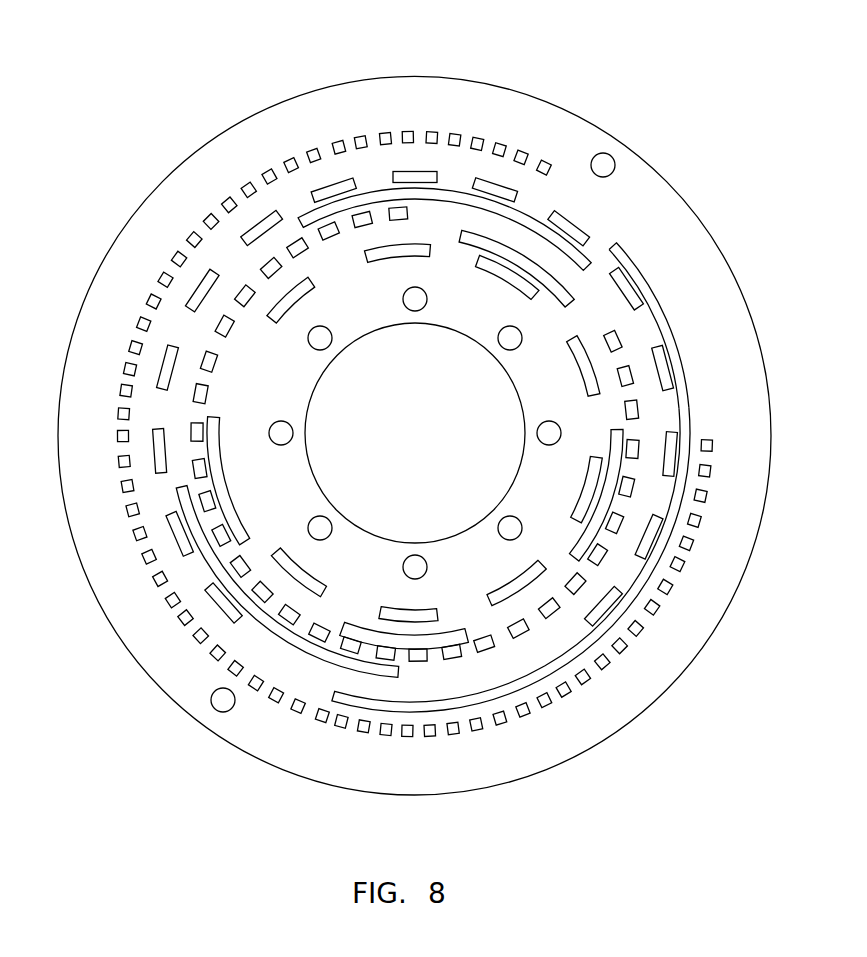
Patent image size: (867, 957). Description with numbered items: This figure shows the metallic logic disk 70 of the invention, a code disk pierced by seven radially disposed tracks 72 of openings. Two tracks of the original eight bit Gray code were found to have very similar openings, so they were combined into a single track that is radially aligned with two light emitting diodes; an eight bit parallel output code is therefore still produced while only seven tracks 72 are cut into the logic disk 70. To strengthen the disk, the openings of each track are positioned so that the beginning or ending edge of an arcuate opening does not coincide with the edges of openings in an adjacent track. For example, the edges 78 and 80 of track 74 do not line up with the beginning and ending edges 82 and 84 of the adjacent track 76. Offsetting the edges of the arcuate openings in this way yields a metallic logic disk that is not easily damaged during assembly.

The logic disk 70 is at (165, 173).
The tracks 72 is at (310, 597).
The track 74 is at (575, 223).
The track 76 is at (683, 357).
The edge 78 is at (553, 211).
The edge 80 is at (595, 243).
The beginning edge 82 is at (616, 240).
The ending edge 84 is at (328, 697).